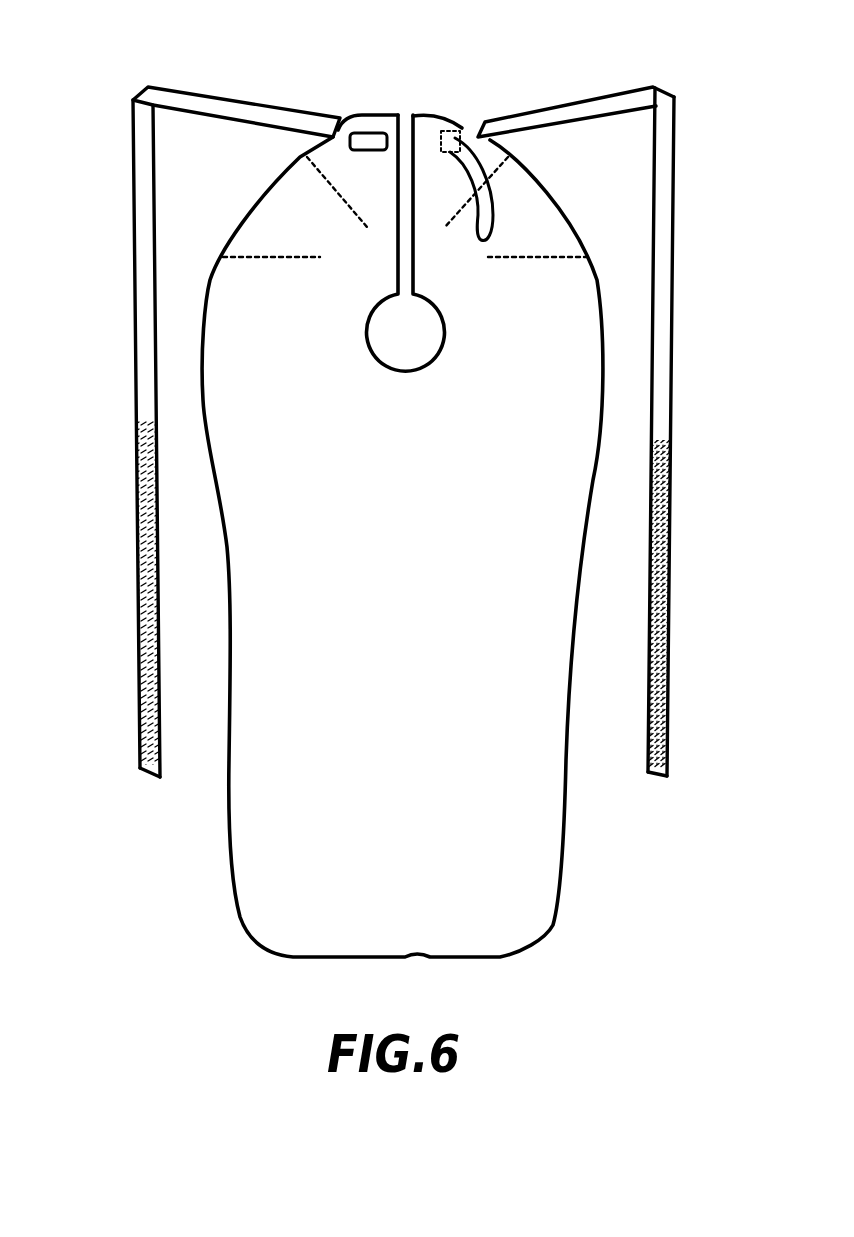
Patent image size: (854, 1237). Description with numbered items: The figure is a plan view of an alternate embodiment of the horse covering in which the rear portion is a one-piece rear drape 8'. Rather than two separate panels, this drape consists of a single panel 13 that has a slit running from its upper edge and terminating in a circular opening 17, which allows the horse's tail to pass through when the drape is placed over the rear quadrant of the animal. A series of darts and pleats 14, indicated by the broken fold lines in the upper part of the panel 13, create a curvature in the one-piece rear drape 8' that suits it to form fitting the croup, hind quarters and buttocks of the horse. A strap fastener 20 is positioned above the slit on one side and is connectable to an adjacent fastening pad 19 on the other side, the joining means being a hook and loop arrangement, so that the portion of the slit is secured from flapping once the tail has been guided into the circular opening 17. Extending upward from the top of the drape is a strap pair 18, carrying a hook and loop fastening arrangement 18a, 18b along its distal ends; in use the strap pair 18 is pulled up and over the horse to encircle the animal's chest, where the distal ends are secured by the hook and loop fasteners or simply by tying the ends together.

The one-piece rear drape 8' is at (161, 850).
The single panel 13 is at (402, 536).
The darts and pleats 14 is at (243, 257).
The circular opening 17 is at (443, 345).
The strap pair 18 is at (397, 432).
The hook and loop fastening arrangement 18a is at (142, 710).
The hook and loop fastening arrangement 18b is at (667, 687).
The fastening pad 19 is at (383, 131).
The strap fastener 20 is at (452, 133).